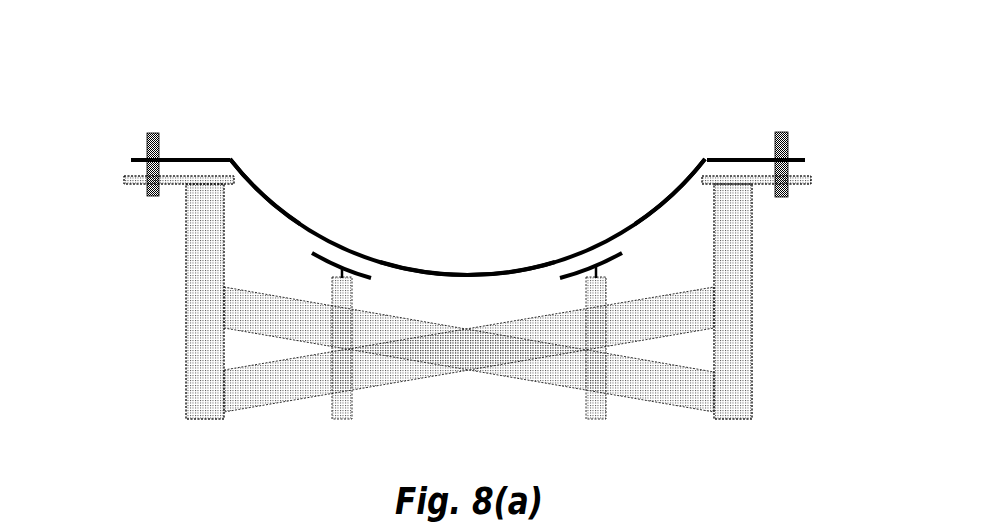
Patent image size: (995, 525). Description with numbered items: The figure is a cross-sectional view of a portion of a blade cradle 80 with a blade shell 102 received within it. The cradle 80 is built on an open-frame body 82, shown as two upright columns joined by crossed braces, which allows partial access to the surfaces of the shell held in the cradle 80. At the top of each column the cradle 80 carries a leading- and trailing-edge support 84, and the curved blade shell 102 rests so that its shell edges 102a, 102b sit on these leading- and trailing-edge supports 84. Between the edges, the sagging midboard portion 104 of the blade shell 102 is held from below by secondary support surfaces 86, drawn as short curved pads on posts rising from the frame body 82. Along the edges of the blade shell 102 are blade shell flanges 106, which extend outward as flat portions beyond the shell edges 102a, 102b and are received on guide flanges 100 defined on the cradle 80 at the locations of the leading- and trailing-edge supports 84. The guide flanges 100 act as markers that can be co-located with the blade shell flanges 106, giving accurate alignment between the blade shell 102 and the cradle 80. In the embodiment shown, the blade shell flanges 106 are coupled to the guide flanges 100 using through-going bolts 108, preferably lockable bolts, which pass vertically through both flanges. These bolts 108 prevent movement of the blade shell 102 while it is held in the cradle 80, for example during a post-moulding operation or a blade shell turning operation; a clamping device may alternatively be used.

The blade cradle 80 is at (158, 410).
The open-frame body 82 is at (210, 305).
The leading- and trailing-edge supports 84 is at (218, 178).
The secondary support surfaces 86 is at (363, 277).
The guide flanges 100 is at (127, 177).
The blade shell 102 is at (468, 142).
The shell edge 102a is at (257, 150).
The shell edge 102b is at (697, 150).
The midboard portion 104 is at (492, 275).
The blade shell flanges 106 is at (198, 157).
The through-going bolts 108 is at (153, 132).